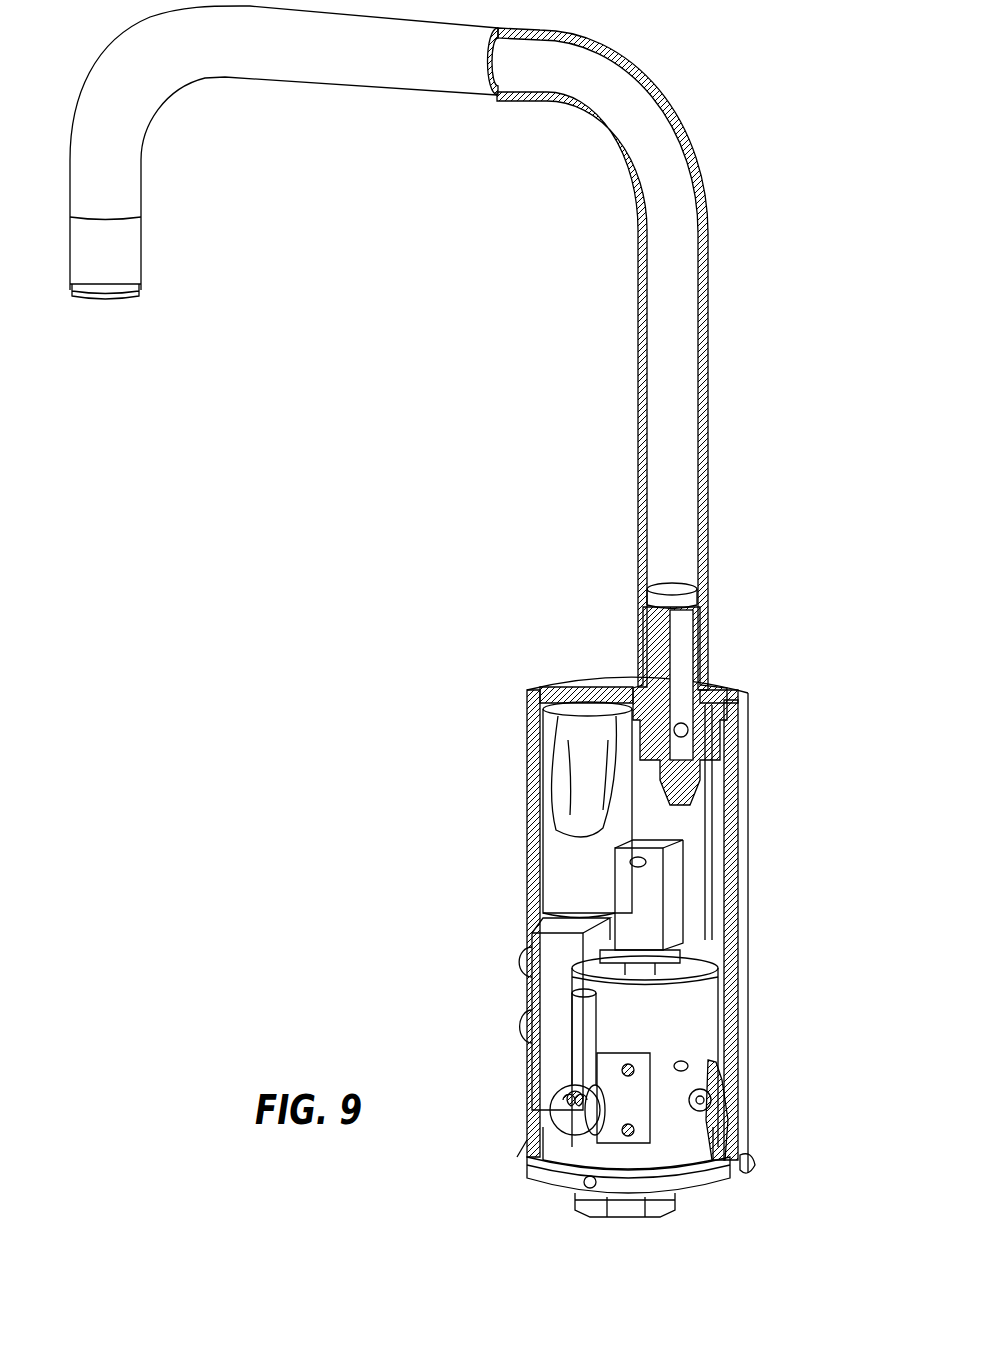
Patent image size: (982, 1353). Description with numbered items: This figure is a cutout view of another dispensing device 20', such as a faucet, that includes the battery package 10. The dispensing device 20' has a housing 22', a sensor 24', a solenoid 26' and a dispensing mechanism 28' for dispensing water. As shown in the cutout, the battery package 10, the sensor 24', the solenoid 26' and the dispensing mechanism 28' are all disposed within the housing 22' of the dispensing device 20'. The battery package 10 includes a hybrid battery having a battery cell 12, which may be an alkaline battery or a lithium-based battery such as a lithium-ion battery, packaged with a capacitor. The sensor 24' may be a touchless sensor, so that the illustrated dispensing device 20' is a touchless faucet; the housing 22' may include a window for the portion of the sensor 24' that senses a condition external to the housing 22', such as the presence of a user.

The dispensing device 20' is at (668, 359).
The housing 22' is at (284, 152).
The battery package 10 is at (540, 757).
The battery cell 12 is at (573, 857).
The sensor 24' is at (521, 1014).
The solenoid 26' is at (710, 907).
The dispensing mechanism 28' is at (668, 1086).